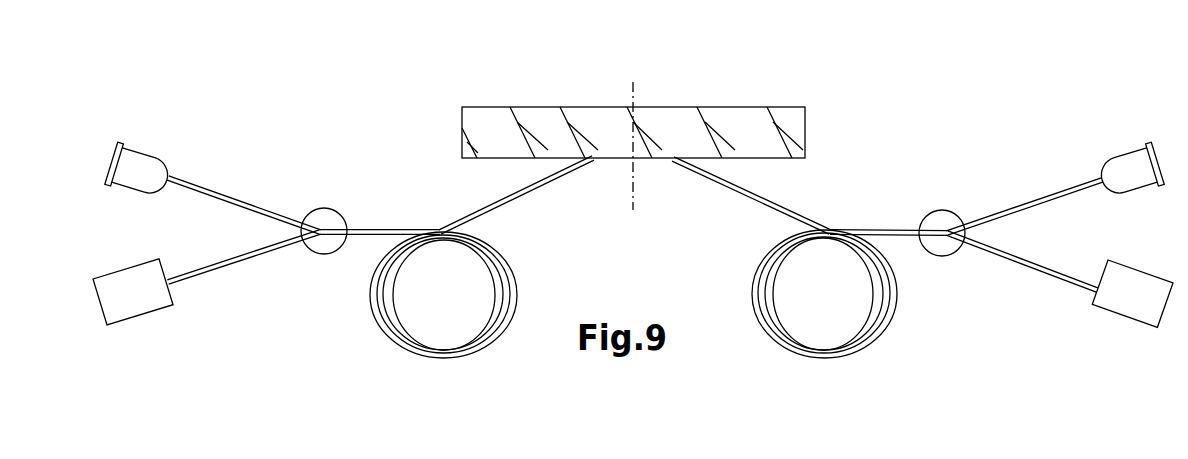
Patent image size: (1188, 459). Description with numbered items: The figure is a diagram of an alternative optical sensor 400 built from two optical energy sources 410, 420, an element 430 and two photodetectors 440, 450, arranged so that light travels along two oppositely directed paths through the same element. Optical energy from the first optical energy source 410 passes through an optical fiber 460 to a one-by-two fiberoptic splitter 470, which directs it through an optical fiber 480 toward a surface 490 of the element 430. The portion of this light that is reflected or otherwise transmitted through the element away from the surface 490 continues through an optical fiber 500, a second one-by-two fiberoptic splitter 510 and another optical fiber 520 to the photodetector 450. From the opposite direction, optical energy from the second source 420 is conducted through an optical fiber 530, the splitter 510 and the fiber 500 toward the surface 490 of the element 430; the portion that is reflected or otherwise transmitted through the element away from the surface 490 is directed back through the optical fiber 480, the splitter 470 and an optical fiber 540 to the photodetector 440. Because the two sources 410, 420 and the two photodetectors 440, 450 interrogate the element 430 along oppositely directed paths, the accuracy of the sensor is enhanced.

The optical sensor 400 is at (920, 90).
The optical energy source 410 is at (140, 148).
The optical energy source 420 is at (1137, 148).
The element 430 is at (805, 128).
The photodetector 440 is at (120, 323).
The photodetector 450 is at (1133, 323).
The optical fiber 460 is at (202, 185).
The 1×2 fiberoptic splitter 470 is at (326, 208).
The optical fiber 480 is at (510, 202).
The surface 490 is at (502, 107).
The optical fiber 500 is at (760, 203).
The 1×2 fiberoptic splitter 510 is at (940, 218).
The optical fiber 520 is at (1055, 277).
The optical fiber 530 is at (1053, 188).
The optical fiber 540 is at (220, 270).